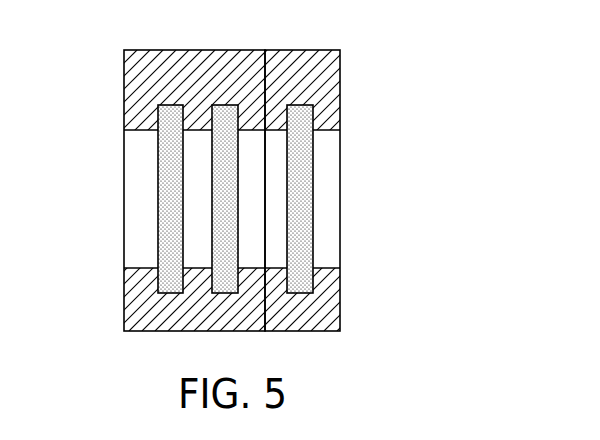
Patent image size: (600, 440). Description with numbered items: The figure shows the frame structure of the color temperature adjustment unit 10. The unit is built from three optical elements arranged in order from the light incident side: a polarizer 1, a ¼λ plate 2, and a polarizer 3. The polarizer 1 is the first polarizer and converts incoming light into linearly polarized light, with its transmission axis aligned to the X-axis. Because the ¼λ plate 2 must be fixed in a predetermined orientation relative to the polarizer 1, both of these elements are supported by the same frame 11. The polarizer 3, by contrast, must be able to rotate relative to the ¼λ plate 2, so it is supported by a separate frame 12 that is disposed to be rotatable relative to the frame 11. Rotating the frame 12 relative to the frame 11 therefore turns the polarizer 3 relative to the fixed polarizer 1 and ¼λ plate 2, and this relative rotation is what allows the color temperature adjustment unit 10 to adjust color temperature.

The polarizer 1 is at (172, 104).
The ¼λ plate 2 is at (227, 104).
The polarizer 3 is at (305, 104).
The color temperature adjustment unit 10 is at (300, 165).
The frame 11 is at (135, 93).
The frame 12 is at (337, 100).